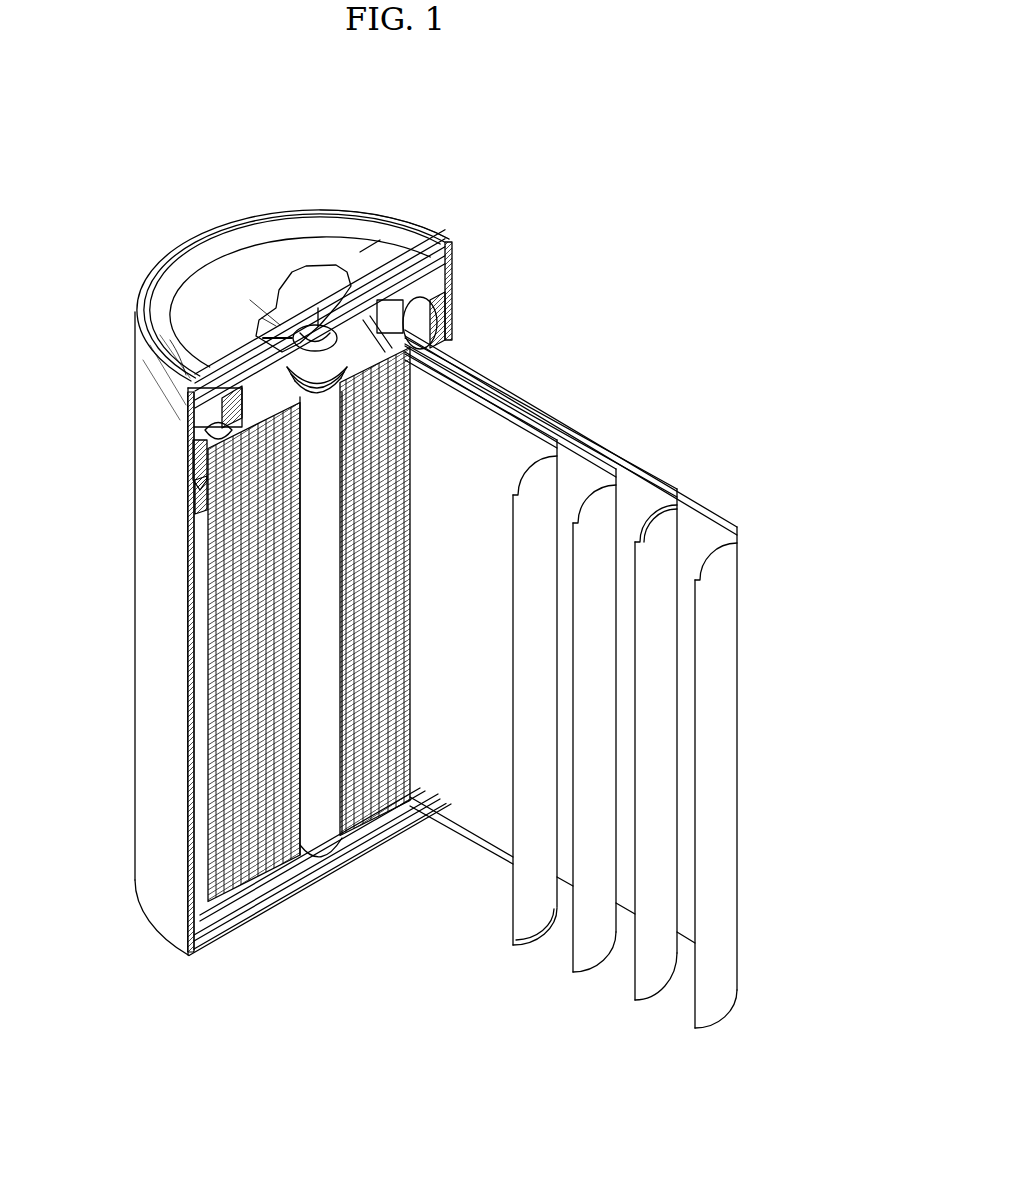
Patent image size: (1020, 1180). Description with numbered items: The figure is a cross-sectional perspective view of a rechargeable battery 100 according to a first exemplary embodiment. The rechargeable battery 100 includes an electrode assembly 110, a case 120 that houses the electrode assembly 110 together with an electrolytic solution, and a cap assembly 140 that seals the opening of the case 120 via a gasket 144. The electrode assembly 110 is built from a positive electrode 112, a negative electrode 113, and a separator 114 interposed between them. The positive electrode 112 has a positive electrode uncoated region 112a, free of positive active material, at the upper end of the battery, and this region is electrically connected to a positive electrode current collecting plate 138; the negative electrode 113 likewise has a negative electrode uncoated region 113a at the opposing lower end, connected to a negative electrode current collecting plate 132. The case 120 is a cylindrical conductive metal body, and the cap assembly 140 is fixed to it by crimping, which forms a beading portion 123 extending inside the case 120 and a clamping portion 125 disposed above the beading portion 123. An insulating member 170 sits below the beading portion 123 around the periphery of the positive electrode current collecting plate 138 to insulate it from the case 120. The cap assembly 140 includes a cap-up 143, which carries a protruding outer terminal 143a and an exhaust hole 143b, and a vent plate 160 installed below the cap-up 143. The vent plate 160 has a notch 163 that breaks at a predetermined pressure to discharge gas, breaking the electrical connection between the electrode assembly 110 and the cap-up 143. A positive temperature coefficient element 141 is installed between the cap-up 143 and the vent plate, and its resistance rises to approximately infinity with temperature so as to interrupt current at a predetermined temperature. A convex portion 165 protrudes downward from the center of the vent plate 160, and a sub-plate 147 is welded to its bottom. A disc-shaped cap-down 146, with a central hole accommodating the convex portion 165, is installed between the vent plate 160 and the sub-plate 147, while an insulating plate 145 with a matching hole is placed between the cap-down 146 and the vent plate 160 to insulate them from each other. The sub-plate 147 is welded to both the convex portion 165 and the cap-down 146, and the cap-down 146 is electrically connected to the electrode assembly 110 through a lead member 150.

The rechargeable battery 100 is at (353, 108).
The electrode assembly 110 is at (371, 825).
The positive electrode 112 is at (654, 996).
The positive electrode uncoated region 112a is at (630, 466).
The negative electrode 113 is at (510, 932).
The negative electrode uncoated region 113a is at (521, 950).
The separator 114 is at (592, 960).
The case 120 is at (162, 580).
The beading portion 123 is at (233, 433).
The clamping portion 125 is at (162, 383).
The negative electrode current collecting plate 132 is at (262, 906).
The positive electrode current collecting plate 138 is at (212, 442).
The cap assembly 140 is at (535, 160).
The positive temperature coefficient element 141 is at (368, 265).
The cap-up 143 is at (360, 250).
The protruding outer terminal 143a is at (278, 325).
The exhaust hole 143b is at (270, 323).
The gasket 144 is at (174, 350).
The insulating plate 145 is at (430, 312).
The cap-down 146 is at (418, 318).
The sub-plate 147 is at (408, 328).
The lead member 150 is at (415, 342).
The vent plate 160 is at (432, 298).
The notch 163 is at (308, 340).
The convex portion 165 is at (282, 292).
The insulating member 170 is at (204, 494).